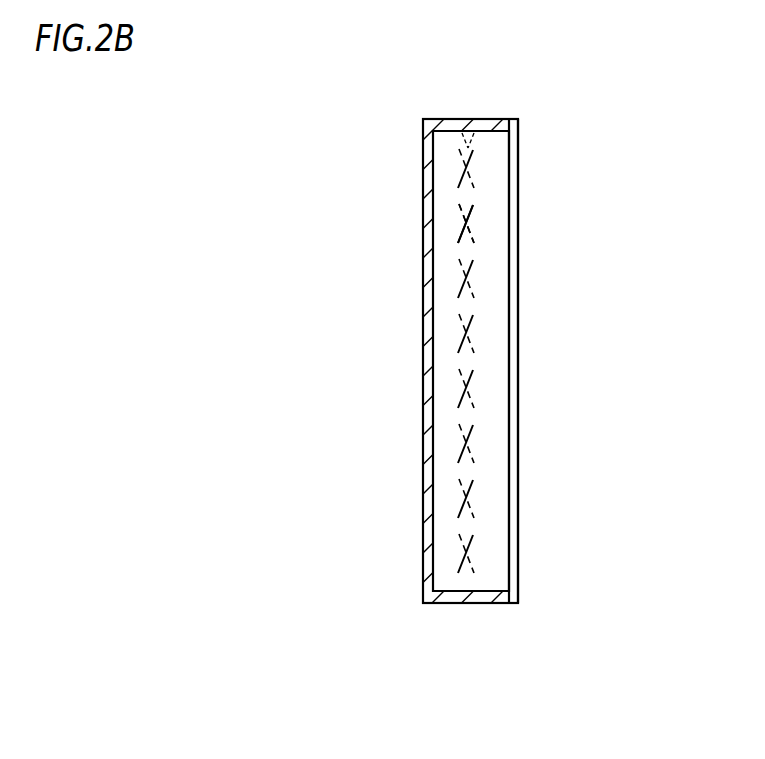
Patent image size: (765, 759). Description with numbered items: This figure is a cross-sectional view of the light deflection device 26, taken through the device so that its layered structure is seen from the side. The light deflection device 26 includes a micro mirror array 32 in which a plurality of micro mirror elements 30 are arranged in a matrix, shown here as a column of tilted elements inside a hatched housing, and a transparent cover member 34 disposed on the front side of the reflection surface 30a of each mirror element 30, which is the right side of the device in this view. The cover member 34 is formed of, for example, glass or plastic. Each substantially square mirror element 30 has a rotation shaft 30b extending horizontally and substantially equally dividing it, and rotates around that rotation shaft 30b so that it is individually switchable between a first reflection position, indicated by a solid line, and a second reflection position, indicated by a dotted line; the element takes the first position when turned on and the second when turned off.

The light deflection device 26 is at (491, 675).
The micro mirror element 30 is at (463, 178).
The reflection surface 30a is at (466, 223).
The rotation shaft 30b is at (464, 224).
The micro mirror array 32 is at (470, 130).
The cover member 34 is at (518, 590).